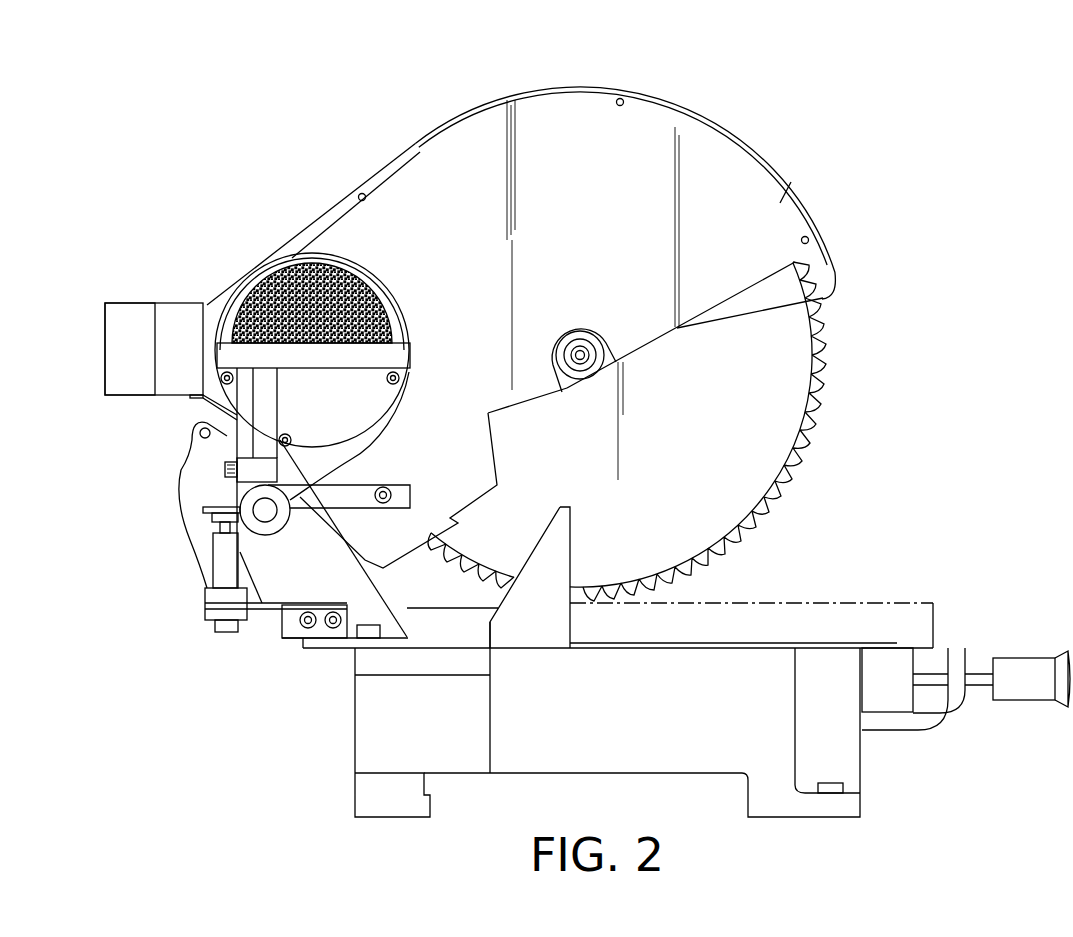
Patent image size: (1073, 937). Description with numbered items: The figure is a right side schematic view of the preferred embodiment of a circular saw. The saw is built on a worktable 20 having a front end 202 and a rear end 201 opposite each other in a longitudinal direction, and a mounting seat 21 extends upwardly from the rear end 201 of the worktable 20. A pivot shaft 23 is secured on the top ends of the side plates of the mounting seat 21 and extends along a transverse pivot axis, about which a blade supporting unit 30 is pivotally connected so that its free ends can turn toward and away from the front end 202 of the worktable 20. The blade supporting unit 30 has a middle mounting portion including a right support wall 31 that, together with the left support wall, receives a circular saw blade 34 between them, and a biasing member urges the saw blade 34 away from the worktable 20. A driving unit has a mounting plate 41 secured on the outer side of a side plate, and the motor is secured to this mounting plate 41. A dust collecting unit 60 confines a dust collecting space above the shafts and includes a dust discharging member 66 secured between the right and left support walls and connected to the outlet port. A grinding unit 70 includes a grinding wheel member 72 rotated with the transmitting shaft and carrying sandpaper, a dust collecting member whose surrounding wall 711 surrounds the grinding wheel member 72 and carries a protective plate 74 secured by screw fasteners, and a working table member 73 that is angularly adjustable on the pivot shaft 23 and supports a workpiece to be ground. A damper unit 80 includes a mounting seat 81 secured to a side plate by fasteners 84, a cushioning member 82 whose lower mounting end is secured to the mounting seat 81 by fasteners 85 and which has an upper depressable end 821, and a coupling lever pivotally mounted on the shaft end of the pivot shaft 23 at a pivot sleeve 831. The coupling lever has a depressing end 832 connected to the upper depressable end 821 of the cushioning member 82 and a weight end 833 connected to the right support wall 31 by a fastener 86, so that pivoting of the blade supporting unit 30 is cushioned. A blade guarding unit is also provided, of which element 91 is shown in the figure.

The worktable 20 is at (354, 762).
The rear end 201 is at (354, 660).
The front end 202 is at (834, 643).
The mounting seat 21 is at (255, 612).
The pivot shaft 23 is at (372, 425).
The blade supporting unit 30 is at (774, 164).
The right support wall 31 is at (792, 182).
The circular saw blade 34 is at (826, 330).
The mounting plate 41 is at (190, 446).
The dust collecting unit 60 is at (171, 303).
The dust discharging member 66 is at (146, 303).
The grinding unit 70 is at (386, 300).
The surrounding wall 711 is at (349, 254).
The grinding wheel member 72 is at (282, 290).
The working table member 73 is at (238, 343).
The protective plate 74 is at (418, 372).
The damper unit 80 is at (174, 594).
The mounting seat 81 is at (267, 612).
The cushioning member 82 is at (213, 560).
The upper depressable end 821 is at (220, 526).
The pivot sleeve 831 is at (246, 497).
The depressing end 832 is at (203, 510).
The weight end 833 is at (370, 484).
The fasteners 84 is at (305, 629).
The fasteners 85 is at (205, 597).
The fastener 86 is at (412, 495).
The pointer 91 is at (830, 244).